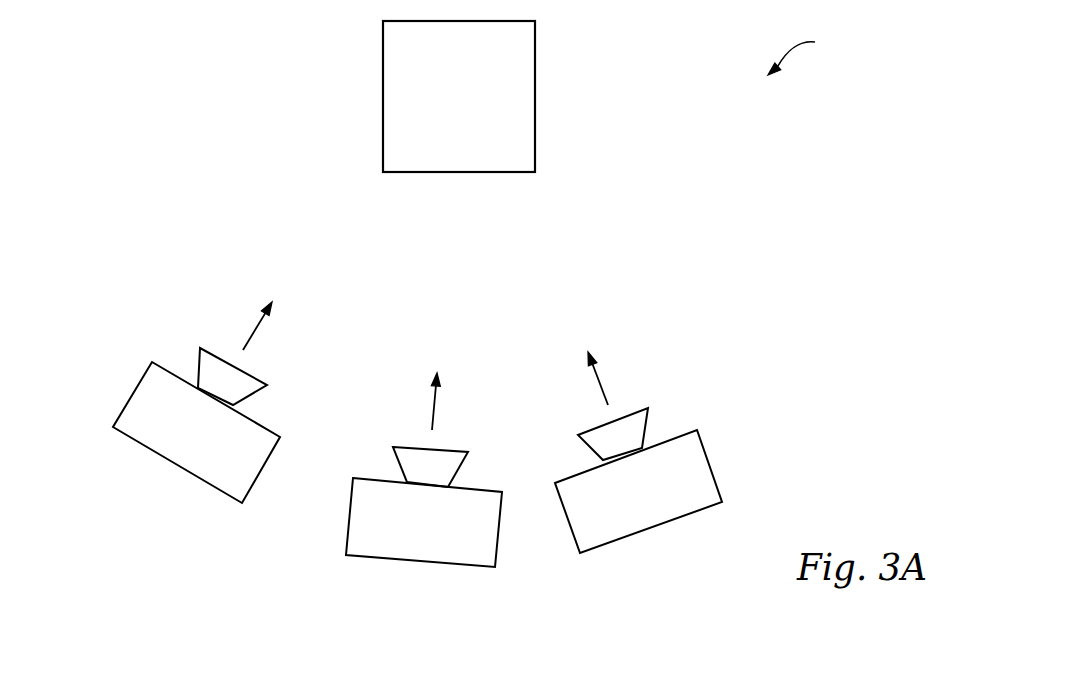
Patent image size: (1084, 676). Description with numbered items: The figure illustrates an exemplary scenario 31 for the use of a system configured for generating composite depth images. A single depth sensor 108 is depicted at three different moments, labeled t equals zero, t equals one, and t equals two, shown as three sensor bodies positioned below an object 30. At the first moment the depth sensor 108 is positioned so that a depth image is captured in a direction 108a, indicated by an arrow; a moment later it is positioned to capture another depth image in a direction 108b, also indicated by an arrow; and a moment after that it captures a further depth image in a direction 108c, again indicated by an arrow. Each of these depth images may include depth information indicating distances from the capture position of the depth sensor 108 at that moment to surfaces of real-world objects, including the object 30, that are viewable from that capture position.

The object 30 is at (508, 108).
The exemplary scenario 31 is at (806, 53).
The depth sensor 108 is at (183, 450).
The direction 108a is at (250, 343).
The direction 108b is at (433, 413).
The direction 108c is at (598, 392).